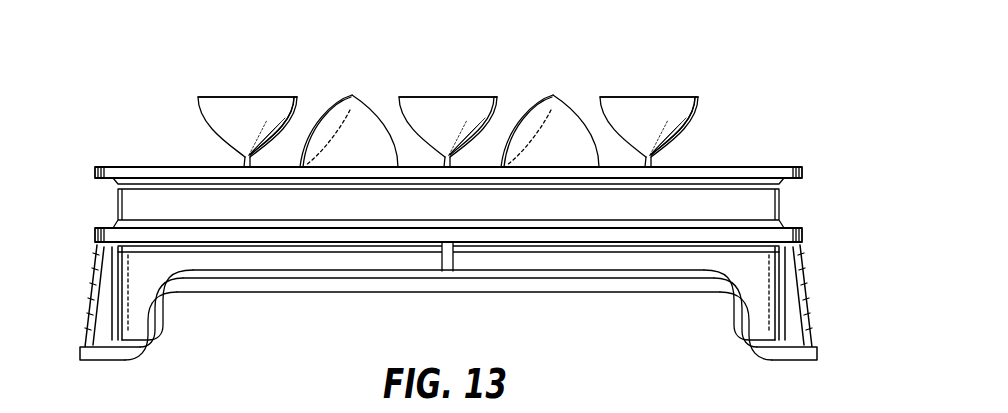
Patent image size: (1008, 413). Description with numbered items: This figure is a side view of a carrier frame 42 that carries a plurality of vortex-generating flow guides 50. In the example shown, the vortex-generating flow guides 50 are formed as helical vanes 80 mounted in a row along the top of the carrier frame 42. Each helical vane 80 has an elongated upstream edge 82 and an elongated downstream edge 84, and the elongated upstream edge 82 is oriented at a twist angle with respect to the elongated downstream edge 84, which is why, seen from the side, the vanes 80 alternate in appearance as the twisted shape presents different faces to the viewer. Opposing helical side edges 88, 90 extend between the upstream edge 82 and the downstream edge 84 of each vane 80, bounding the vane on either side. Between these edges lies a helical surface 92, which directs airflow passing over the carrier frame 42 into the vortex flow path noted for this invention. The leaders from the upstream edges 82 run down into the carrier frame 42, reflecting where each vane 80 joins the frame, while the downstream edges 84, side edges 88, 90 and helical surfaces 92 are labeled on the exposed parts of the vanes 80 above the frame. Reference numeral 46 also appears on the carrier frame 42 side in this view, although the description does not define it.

The carrier frame 42 is at (806, 279).
The rail body 46 is at (770, 163).
The vortex-generating flow guide 50 is at (745, 56).
The helical vane 80 is at (213, 88).
The elongated upstream edge 82 is at (252, 167).
The elongated downstream edge 84 is at (246, 97).
The helical side edge 88 is at (208, 127).
The helical side edge 90 is at (288, 123).
The helical surface 92 is at (225, 130).